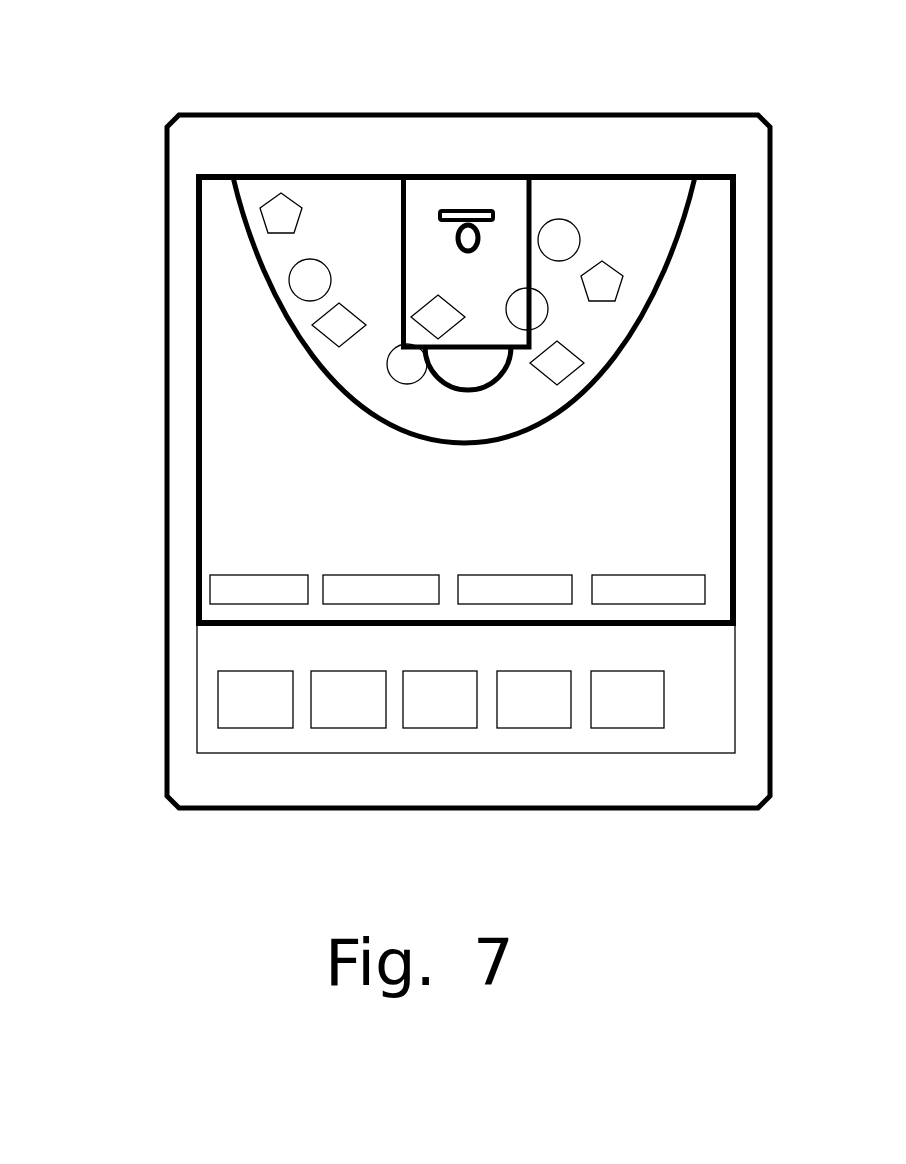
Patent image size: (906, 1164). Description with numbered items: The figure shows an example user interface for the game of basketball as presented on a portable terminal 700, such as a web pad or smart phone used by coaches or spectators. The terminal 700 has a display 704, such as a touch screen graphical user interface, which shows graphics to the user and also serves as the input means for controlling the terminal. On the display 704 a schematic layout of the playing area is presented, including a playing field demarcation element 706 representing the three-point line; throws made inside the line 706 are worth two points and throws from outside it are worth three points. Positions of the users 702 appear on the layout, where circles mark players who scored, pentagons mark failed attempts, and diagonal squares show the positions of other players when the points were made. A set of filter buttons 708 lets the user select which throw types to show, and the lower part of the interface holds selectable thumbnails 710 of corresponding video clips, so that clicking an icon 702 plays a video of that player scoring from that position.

The portable terminal 700 is at (210, 130).
The positions of the users 702 is at (290, 273).
The display 704 is at (463, 177).
The playing field demarcation element 706 is at (282, 313).
The filter buttons 708 is at (237, 577).
The thumbnails 710 is at (232, 700).